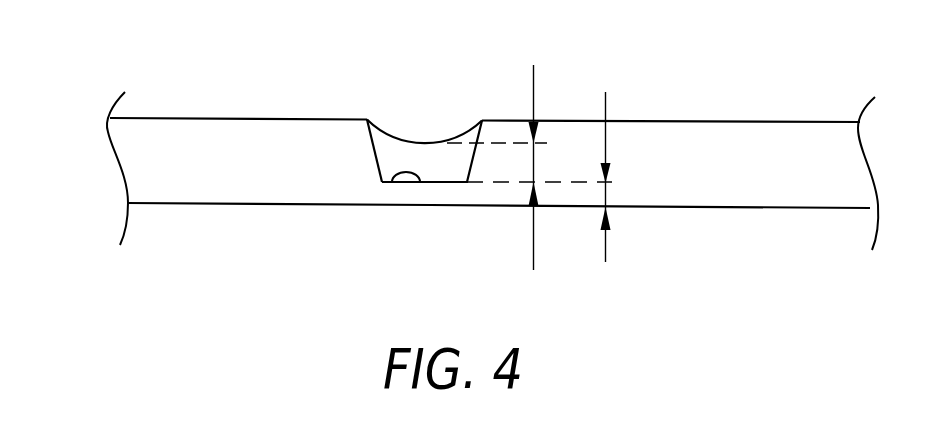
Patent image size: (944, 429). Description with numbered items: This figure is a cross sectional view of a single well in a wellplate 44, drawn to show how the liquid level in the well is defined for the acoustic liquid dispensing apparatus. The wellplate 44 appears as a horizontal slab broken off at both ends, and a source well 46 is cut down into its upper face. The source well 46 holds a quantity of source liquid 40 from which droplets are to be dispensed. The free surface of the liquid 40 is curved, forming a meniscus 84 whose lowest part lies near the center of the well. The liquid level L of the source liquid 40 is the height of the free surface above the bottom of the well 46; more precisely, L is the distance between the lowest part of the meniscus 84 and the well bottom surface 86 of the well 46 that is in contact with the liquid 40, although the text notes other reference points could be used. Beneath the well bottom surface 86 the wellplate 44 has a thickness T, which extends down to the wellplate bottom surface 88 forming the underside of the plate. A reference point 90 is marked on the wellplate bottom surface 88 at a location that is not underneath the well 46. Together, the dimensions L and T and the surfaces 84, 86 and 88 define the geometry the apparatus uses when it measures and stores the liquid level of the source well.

The wellplate 44 is at (115, 143).
The source well 46 is at (368, 147).
The meniscus 84 is at (380, 125).
The source liquid 40 is at (415, 152).
The well bottom surface 86 is at (402, 172).
The wellplate bottom surface 88 is at (437, 207).
The reference point 90 is at (248, 205).
The liquid level L is at (548, 163).
The thickness T is at (607, 197).